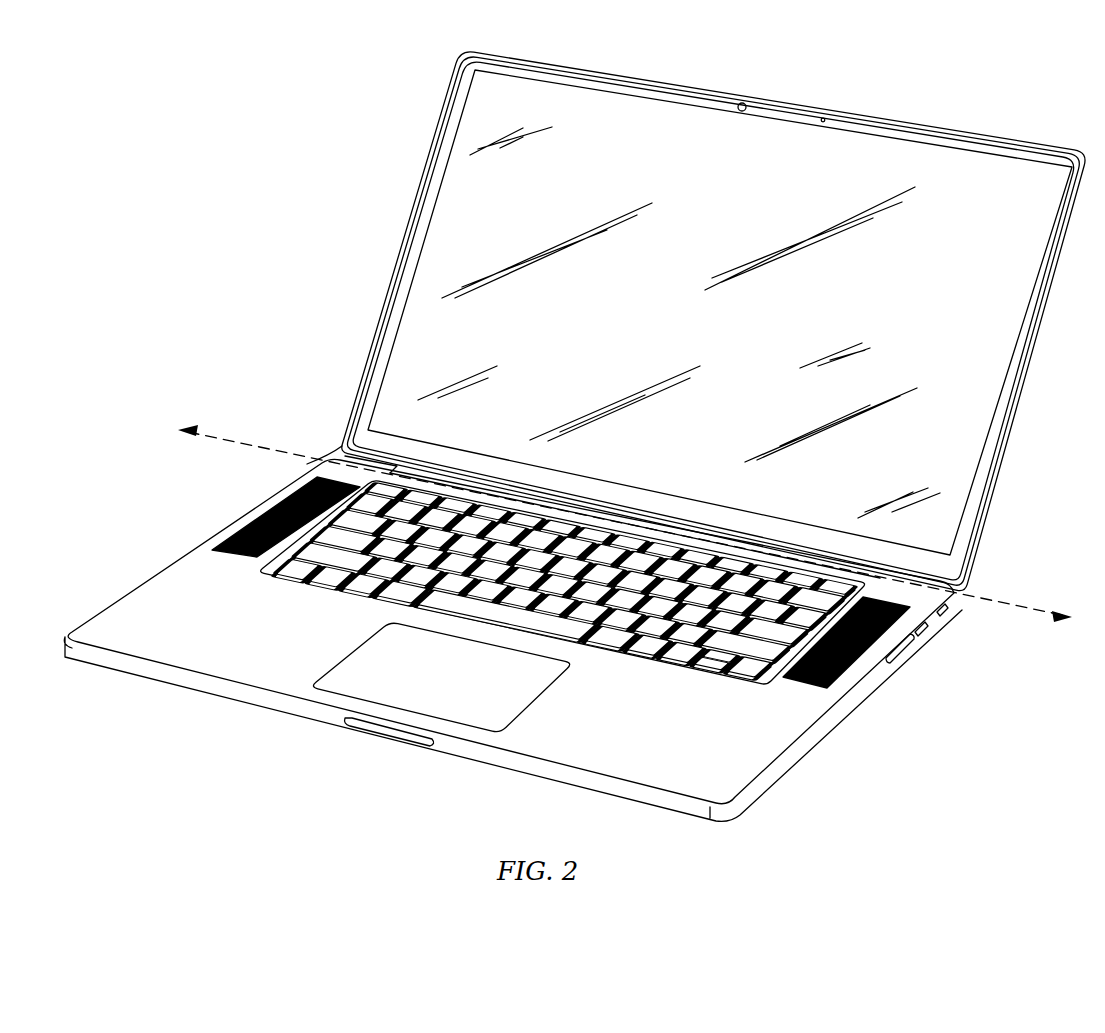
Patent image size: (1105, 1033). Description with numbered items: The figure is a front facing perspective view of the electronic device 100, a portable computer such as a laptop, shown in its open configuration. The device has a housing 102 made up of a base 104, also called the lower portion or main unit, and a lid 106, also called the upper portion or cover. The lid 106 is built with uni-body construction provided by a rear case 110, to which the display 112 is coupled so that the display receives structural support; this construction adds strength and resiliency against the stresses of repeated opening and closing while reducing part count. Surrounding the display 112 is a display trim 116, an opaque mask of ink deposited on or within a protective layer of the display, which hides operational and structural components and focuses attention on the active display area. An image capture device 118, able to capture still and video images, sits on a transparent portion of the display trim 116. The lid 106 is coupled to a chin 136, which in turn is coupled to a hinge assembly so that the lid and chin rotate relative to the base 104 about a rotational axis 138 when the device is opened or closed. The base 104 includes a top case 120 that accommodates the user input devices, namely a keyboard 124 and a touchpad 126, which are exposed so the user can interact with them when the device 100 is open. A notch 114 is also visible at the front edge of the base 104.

The electronic device 100 is at (212, 92).
The housing 102 is at (329, 445).
The base 104 is at (506, 640).
The lid 106 is at (417, 170).
The rear case 110 is at (400, 268).
The display 112 is at (695, 329).
The lid release notch 114 is at (407, 733).
The display trim 116 is at (400, 300).
The image capture device 118 is at (748, 104).
The top case 120 is at (222, 598).
The keyboard 124 is at (772, 695).
The touchpad 126 is at (458, 683).
The chin 136 is at (572, 498).
The rotational axis 138 is at (215, 415).